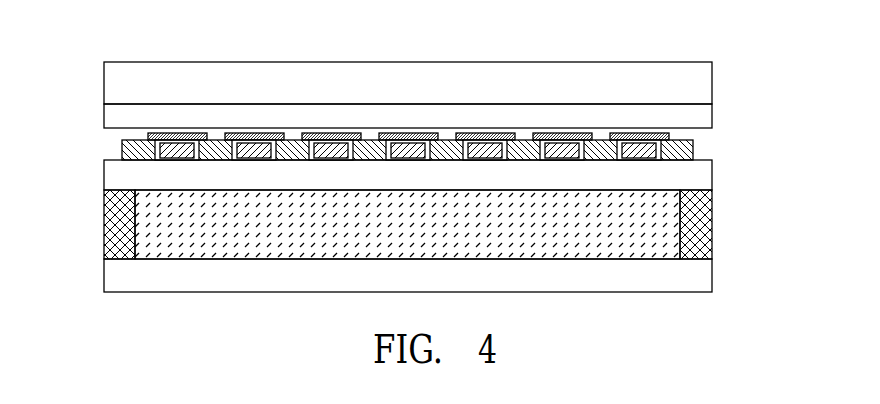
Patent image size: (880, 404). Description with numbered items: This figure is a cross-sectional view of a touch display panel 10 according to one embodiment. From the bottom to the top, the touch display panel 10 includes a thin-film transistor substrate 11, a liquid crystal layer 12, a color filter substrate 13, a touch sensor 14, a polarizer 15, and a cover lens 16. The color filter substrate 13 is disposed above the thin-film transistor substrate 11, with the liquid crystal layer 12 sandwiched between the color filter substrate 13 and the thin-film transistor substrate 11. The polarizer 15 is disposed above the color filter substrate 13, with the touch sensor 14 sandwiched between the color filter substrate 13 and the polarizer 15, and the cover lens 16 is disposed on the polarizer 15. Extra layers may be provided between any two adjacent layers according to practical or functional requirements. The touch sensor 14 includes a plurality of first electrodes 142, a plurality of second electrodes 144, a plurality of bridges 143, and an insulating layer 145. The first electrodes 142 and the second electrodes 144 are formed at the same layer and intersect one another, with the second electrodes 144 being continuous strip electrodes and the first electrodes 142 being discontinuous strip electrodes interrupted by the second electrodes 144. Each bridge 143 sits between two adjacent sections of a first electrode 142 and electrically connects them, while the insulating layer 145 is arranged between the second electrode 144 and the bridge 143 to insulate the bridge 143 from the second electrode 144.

The touch display panel 10 is at (461, 39).
The thin-film transistor substrate 11 is at (702, 273).
The liquid crystal layer 12 is at (670, 230).
The color filter substrate 13 is at (702, 178).
The touch sensor 14 is at (422, 104).
The first electrode 142 is at (122, 147).
The bridge 143 is at (166, 136).
The second electrode 144 is at (181, 140).
The insulating layer 145 is at (185, 132).
The polarizer 15 is at (700, 113).
The cover lens 16 is at (700, 75).